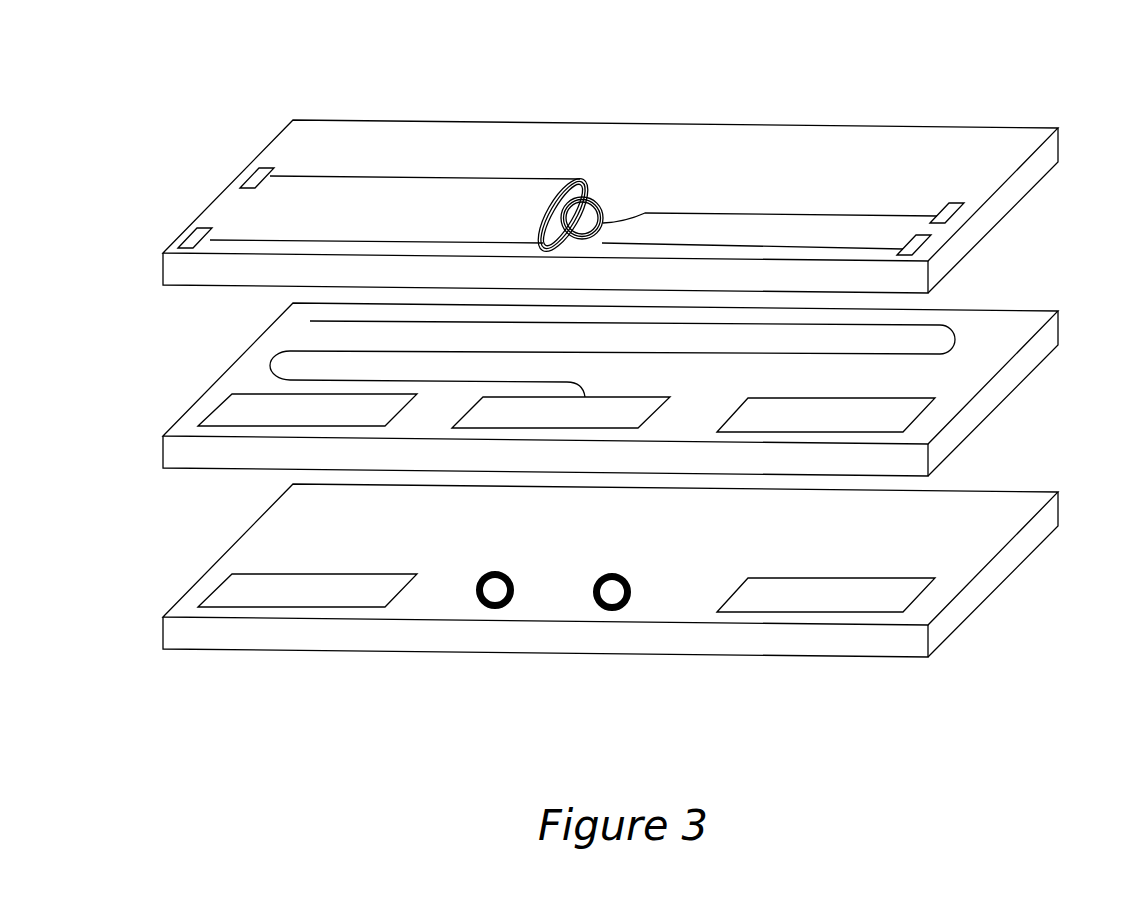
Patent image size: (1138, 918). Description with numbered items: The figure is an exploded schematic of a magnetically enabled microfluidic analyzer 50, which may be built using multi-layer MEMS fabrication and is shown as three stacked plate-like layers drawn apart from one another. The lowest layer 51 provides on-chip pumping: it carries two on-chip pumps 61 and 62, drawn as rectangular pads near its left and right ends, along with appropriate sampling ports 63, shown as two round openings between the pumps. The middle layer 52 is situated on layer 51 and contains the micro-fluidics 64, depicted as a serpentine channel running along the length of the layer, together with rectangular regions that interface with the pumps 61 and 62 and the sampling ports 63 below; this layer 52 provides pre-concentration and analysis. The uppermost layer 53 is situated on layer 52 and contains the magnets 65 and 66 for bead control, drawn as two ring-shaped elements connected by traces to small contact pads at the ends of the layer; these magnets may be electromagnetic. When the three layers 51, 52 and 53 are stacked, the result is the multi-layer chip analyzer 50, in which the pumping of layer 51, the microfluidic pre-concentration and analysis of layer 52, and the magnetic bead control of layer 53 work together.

The magnetically enabled microfluidic analyzer 50 is at (1003, 72).
The layer 51 is at (647, 570).
The layer 52 is at (647, 368).
The layer 53 is at (647, 206).
The on-chip pump 61 is at (310, 578).
The on-chip pump 62 is at (827, 583).
The ports 63 is at (503, 577).
The micro-fluidics 64 is at (960, 325).
The magnet 65 is at (640, 212).
The magnet 66 is at (582, 178).